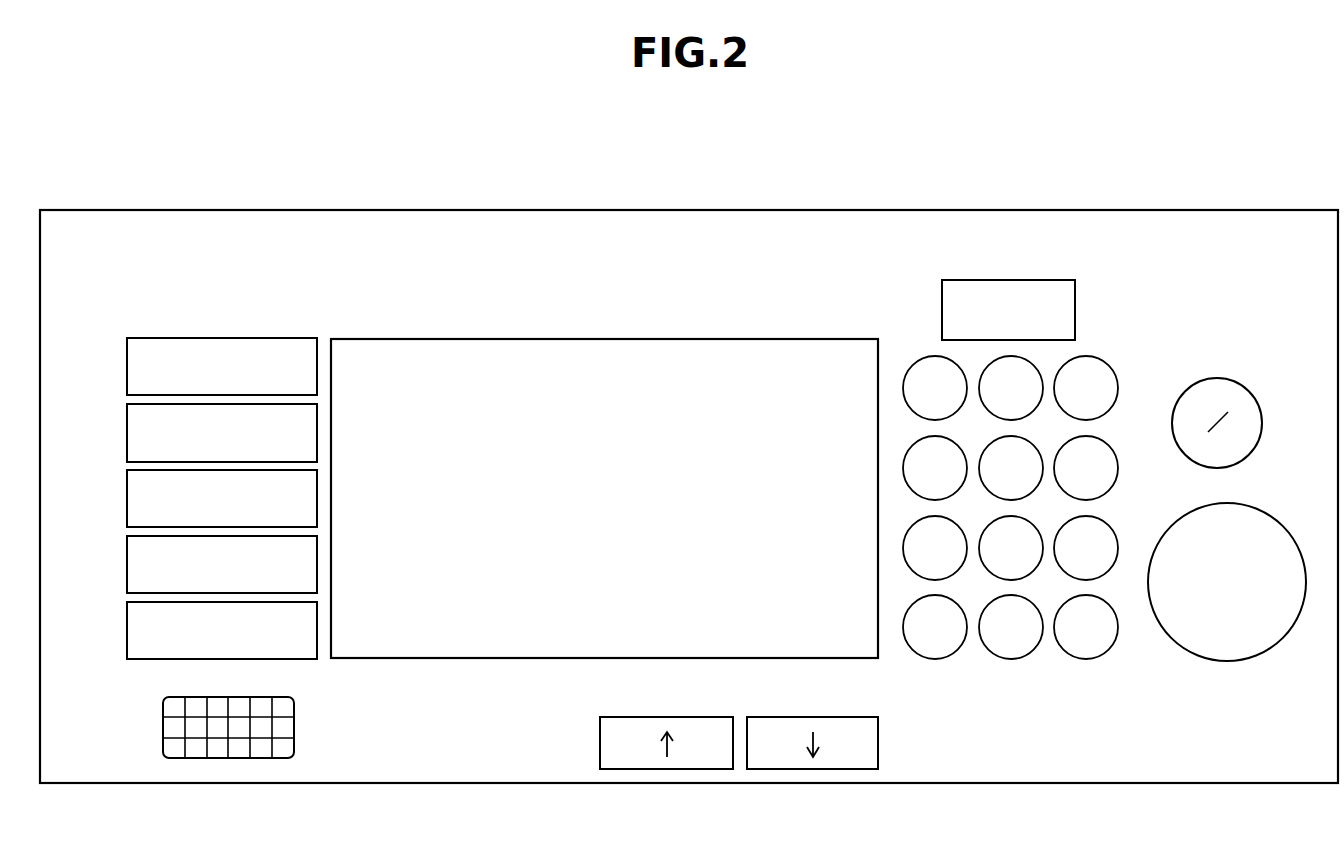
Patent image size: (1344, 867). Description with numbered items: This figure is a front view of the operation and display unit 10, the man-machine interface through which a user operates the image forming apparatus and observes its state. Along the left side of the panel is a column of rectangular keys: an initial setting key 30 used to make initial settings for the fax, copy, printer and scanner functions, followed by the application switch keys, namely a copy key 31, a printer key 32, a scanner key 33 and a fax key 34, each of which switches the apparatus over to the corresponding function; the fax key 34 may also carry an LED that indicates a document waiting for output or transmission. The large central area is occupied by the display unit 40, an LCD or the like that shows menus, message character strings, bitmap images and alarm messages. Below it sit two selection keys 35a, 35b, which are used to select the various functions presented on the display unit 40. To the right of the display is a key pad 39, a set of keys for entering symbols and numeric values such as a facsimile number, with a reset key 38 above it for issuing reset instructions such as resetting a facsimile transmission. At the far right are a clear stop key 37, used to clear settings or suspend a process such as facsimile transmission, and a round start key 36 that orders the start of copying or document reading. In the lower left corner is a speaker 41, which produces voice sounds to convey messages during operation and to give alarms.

The operation and display unit 10 is at (704, 210).
The initial setting key 30 is at (127, 370).
The copy key 31 is at (127, 436).
The printer key 32 is at (127, 503).
The scanner key 33 is at (127, 569).
The fax key 34 is at (127, 635).
The selection key 35a is at (666, 717).
The selection key 35b is at (811, 717).
The start key 36 is at (1280, 521).
The clear stop key 37 is at (1215, 378).
The reset key 38 is at (1005, 280).
The key pad 39 is at (1012, 667).
The display unit 40 is at (604, 339).
The speaker 41 is at (296, 722).